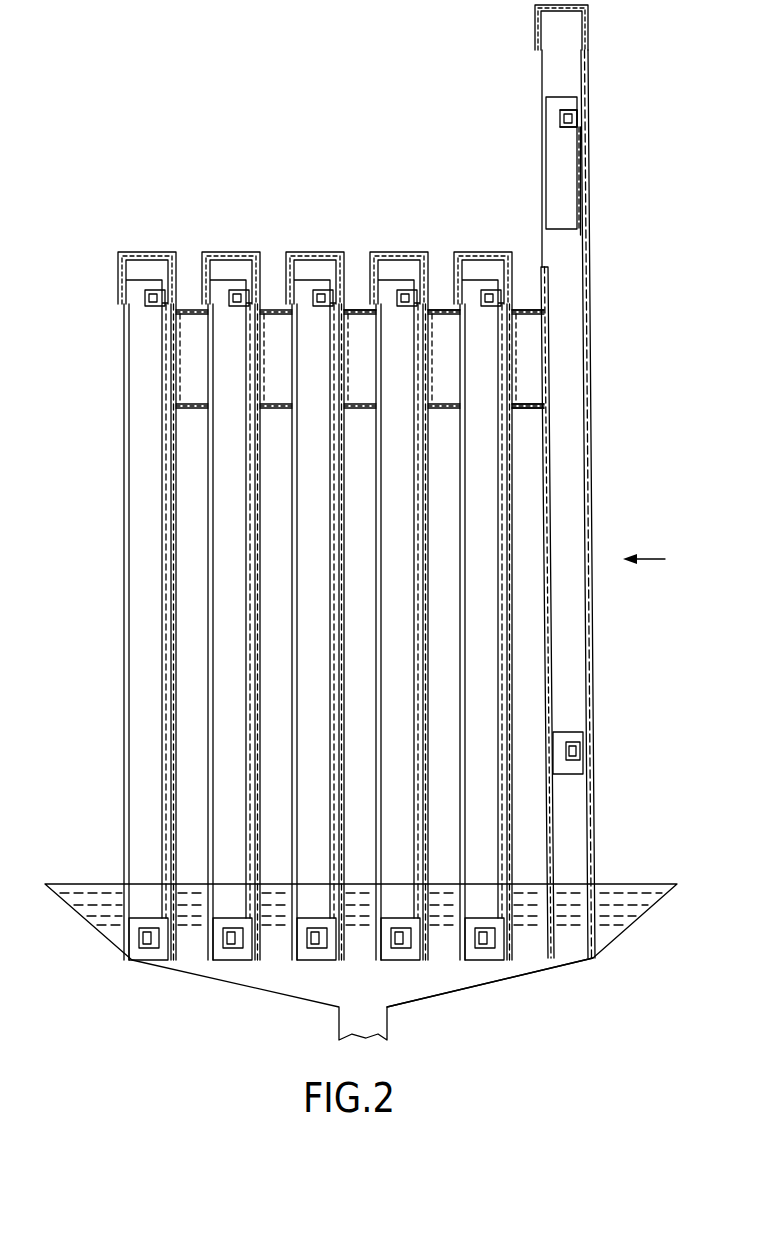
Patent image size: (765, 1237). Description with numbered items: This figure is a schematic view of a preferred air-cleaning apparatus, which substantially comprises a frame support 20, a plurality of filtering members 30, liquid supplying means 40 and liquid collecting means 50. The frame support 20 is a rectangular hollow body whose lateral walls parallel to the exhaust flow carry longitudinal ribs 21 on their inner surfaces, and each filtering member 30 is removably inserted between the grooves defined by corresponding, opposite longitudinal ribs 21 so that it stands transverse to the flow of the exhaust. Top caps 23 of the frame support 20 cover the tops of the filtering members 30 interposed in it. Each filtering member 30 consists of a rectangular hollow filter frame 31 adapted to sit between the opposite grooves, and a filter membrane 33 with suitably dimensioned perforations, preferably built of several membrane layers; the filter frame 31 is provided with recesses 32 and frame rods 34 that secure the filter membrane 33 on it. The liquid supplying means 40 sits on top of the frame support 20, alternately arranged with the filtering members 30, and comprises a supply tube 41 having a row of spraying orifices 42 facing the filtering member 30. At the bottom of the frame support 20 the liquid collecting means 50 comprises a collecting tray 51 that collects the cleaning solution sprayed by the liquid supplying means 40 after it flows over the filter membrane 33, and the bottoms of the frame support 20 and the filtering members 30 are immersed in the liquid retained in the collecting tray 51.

The frame support 20 is at (126, 577).
The longitudinal ribs 21 is at (578, 290).
The top caps 23 is at (535, 25).
The filtering member 30 is at (586, 203).
The filter frame 31 is at (557, 97).
The recesses 32 is at (578, 118).
The filter membrane 33 is at (577, 155).
The frame rods 34 is at (560, 118).
The liquid supplying means 40 is at (524, 373).
The supply tube 41 is at (540, 406).
The spraying orifices 42 is at (343, 330).
The liquid collecting means 50 is at (543, 977).
The collecting tray 51 is at (501, 978).